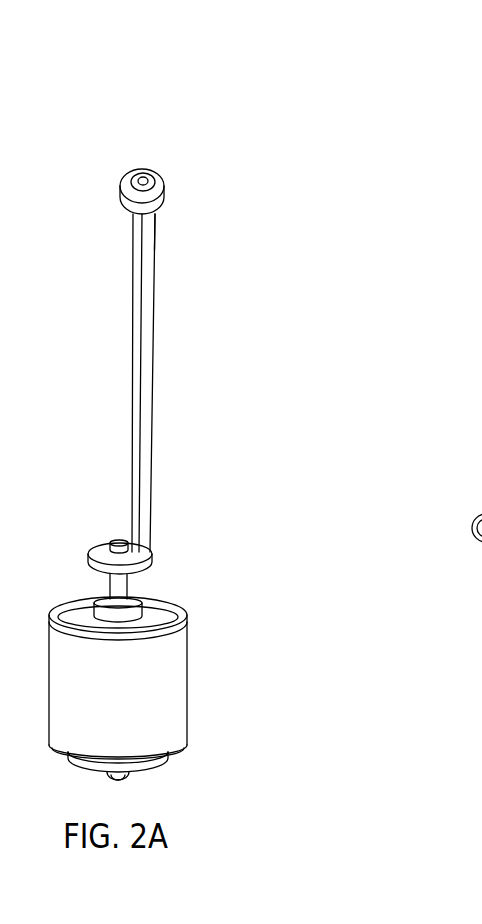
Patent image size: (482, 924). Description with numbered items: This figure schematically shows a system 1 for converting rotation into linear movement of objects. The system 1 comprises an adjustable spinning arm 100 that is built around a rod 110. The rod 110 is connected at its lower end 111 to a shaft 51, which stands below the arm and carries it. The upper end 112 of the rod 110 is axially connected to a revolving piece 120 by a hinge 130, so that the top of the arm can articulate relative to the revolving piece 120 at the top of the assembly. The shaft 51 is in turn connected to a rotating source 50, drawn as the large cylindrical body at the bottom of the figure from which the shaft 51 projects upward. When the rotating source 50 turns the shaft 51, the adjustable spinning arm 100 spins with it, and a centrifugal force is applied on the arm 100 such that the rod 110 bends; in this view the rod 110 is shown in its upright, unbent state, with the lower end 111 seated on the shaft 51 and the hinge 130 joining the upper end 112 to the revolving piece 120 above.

The system 1 is at (289, 102).
The adjustable spinning arm 100 is at (358, 308).
The rod 110 is at (158, 358).
The lower end 111 is at (153, 558).
The upper end 112 is at (161, 228).
The revolving piece 120 is at (169, 192).
The hinge 130 is at (148, 172).
The rotating source 50 is at (190, 678).
The shaft 51 is at (159, 588).